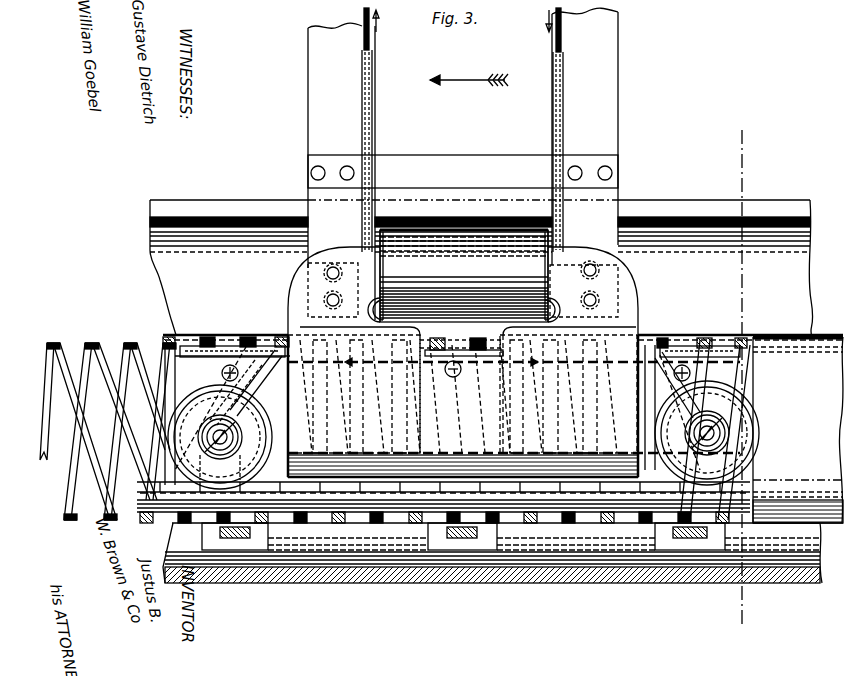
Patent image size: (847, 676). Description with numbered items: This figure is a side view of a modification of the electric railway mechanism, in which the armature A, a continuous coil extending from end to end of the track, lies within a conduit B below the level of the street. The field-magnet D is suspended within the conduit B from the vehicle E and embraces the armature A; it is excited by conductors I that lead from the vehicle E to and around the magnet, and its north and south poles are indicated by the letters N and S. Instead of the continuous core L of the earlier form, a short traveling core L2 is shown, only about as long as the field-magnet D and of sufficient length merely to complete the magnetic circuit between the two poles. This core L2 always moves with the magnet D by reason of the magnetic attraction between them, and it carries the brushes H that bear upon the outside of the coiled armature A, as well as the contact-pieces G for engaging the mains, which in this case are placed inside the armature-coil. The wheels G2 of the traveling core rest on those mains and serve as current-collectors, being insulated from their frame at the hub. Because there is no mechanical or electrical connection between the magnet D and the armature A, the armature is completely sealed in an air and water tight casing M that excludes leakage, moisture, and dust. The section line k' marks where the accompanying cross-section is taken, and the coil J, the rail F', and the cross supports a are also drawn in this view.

The vehicle E is at (463, 164).
The conductors I is at (462, 130).
The conduit B is at (406, 592).
The coil J is at (464, 276).
The field-magnet D is at (462, 394).
The south pole S is at (354, 398).
The north pole N is at (568, 398).
The traveling core L2 is at (461, 394).
The continuous core L is at (465, 384).
The brushes H is at (224, 346).
The contact-pieces G is at (198, 445).
The wheels G2 is at (755, 437).
The armature A is at (303, 434).
The casing M is at (798, 430).
The rail F' is at (478, 516).
The cross supports a is at (463, 536).
The section line k' is at (742, 376).